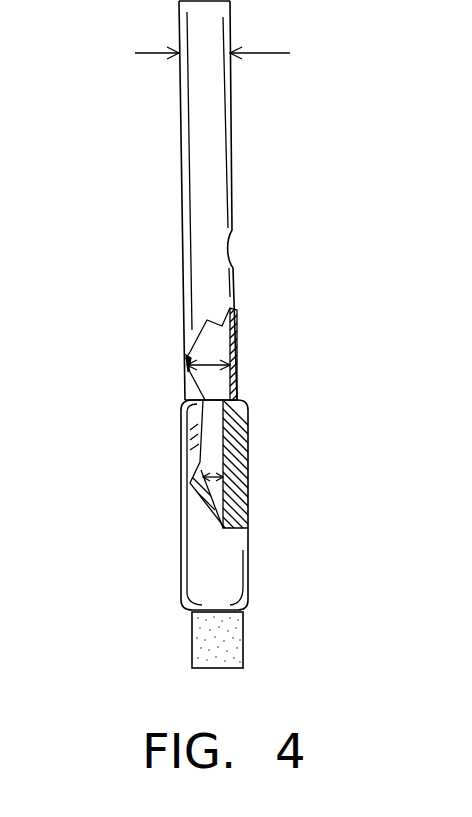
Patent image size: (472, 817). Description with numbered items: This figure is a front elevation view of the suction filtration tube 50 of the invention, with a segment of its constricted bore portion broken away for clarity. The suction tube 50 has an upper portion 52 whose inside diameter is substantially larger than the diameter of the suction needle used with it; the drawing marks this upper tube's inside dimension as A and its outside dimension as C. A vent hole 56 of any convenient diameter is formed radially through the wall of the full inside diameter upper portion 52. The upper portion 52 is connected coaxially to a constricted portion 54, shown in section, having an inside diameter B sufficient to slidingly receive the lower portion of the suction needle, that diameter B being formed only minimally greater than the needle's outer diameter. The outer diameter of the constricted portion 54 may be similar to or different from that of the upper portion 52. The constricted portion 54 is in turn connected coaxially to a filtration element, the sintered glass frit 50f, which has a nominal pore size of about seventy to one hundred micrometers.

The suction filtration tube 50 is at (292, 278).
The sintered glass frit 50f is at (243, 650).
The upper portion 52 is at (148, 402).
The constricted portion 54 is at (148, 403).
The vent hole 56 is at (229, 249).
The inner diameter dimension A is at (208, 349).
The inside diameter of constricted portion B is at (217, 468).
The outer diameter dimension C is at (253, 53).